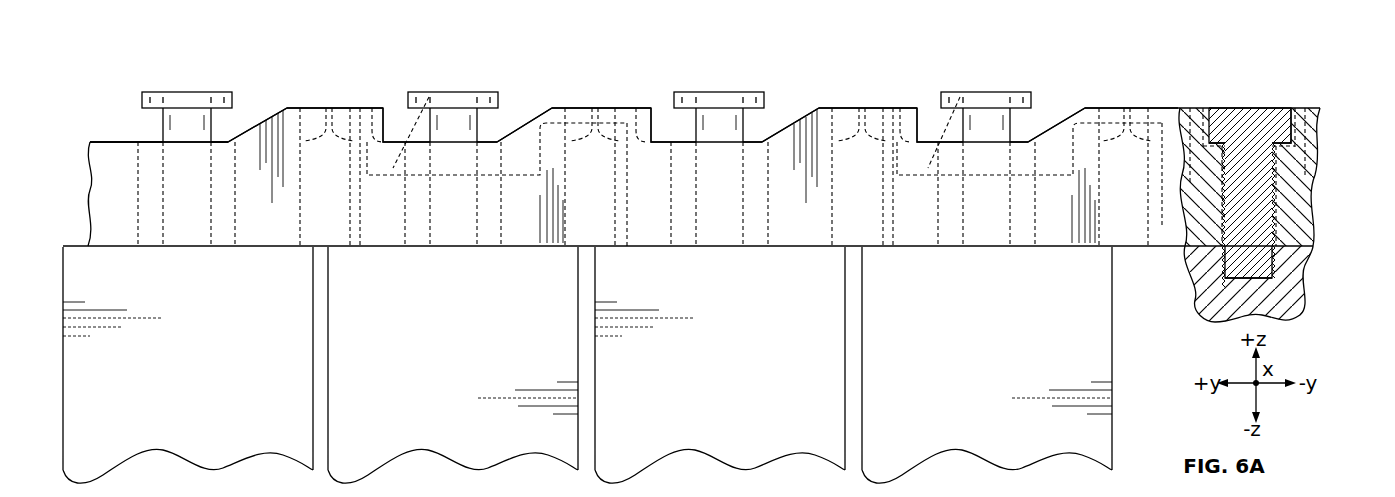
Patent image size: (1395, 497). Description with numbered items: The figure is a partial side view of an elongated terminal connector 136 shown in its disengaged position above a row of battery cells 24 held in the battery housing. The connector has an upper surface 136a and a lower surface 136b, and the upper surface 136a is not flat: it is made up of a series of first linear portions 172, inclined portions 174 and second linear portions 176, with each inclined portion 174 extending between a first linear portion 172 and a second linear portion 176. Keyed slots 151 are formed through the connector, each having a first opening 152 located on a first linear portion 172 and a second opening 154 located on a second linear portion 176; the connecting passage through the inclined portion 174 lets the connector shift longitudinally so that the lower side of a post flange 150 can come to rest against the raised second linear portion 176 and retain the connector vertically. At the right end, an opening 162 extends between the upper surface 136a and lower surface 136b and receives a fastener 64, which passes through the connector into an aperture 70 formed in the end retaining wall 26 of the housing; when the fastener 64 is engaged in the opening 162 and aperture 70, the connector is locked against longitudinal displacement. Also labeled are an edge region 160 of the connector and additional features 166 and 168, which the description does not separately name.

The elongated terminal connector 136 is at (1243, 93).
The upper surface 136a is at (117, 140).
The lower surface 136b is at (98, 250).
The plate edge 160 is at (102, 169).
The first linear portion 172 is at (128, 140).
The inclined portion 174 is at (236, 138).
The keyed slot 151 is at (266, 108).
The second linear portion 176 is at (312, 106).
The fastener 150 is at (188, 90).
The second opening 154 is at (334, 108).
The gasket 166 is at (372, 108).
The sealant layer 168 is at (429, 97).
The first opening 152 is at (404, 230).
The opening 162 is at (1305, 113).
The fastener 64 is at (1270, 112).
The aperture 70 is at (1278, 270).
The end retaining wall 26 is at (1292, 283).
The battery cell 24 is at (163, 376).